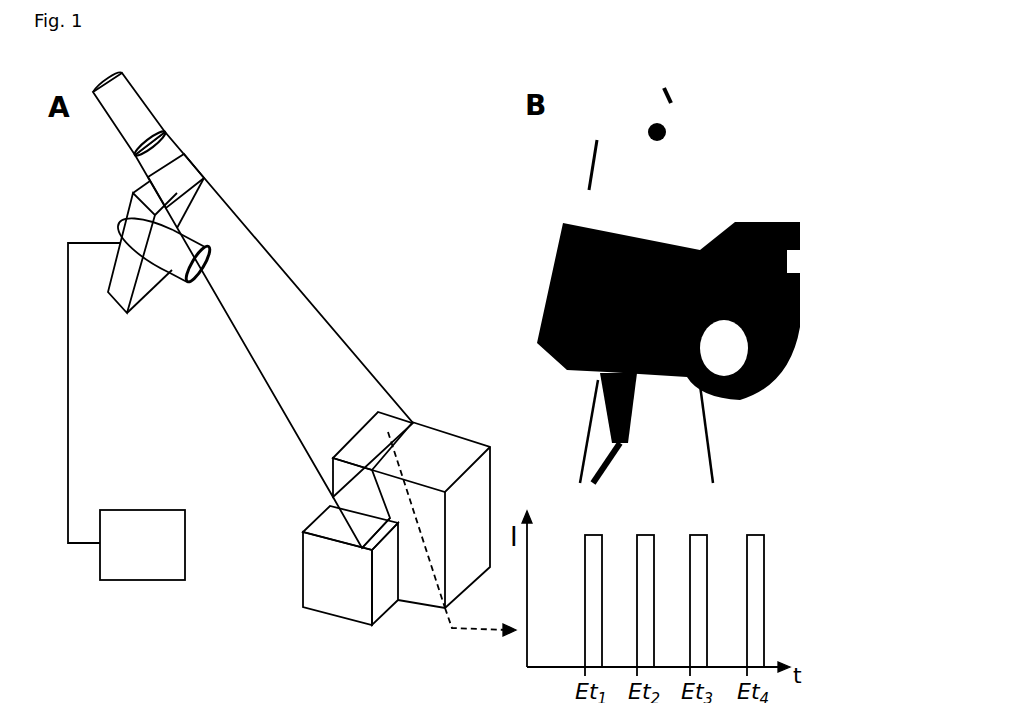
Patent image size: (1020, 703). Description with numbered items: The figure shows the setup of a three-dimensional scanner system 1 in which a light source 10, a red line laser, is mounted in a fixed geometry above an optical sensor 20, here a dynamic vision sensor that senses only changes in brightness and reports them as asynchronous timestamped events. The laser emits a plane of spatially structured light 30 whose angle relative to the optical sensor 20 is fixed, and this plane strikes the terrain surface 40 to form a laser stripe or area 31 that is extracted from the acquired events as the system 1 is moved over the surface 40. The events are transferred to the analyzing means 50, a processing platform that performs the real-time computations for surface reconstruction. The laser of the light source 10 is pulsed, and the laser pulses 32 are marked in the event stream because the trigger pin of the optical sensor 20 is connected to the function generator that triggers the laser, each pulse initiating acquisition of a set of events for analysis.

The system 1 is at (238, 142).
The light source 10 is at (126, 113).
The optical sensor 20 is at (125, 283).
The spatially structured light 30 is at (254, 258).
The laser stripe or area 31 is at (381, 456).
The laser pulses 32 is at (747, 542).
The surface 40 is at (330, 523).
The analyzing means 50 is at (159, 553).